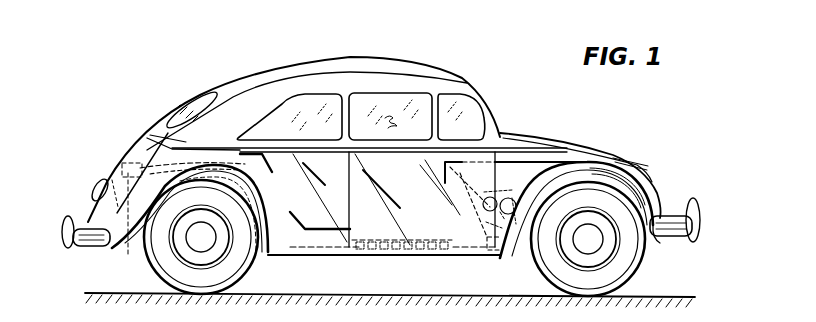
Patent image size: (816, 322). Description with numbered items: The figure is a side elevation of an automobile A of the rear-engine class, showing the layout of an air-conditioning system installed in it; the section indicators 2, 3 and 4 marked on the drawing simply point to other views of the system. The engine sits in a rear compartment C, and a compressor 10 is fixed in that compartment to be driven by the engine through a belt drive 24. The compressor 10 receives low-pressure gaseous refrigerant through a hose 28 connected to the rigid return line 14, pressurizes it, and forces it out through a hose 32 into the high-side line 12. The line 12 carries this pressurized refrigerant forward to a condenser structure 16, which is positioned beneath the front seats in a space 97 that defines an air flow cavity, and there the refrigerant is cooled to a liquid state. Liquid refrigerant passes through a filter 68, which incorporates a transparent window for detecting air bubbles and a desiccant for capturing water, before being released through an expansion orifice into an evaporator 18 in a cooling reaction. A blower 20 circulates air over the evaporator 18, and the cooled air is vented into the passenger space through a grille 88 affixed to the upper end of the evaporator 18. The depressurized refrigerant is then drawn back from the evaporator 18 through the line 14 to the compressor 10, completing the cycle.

The automobile A is at (482, 105).
The rear compartment C is at (141, 146).
The compressor 10 is at (308, 261).
The line 12 is at (286, 206).
The line 14 is at (279, 192).
The condenser structure 16 is at (383, 251).
The evaporator 18 is at (490, 176).
The blower 20 is at (490, 199).
The belt drive 24 is at (84, 206).
The hose 28 is at (184, 142).
The hose 32 is at (167, 180).
The filter 68 is at (507, 205).
The grille 88 is at (446, 168).
The space 97 is at (412, 251).
The section line 2 is at (577, 155).
The section line 3 is at (108, 167).
The section line 4 is at (432, 183).